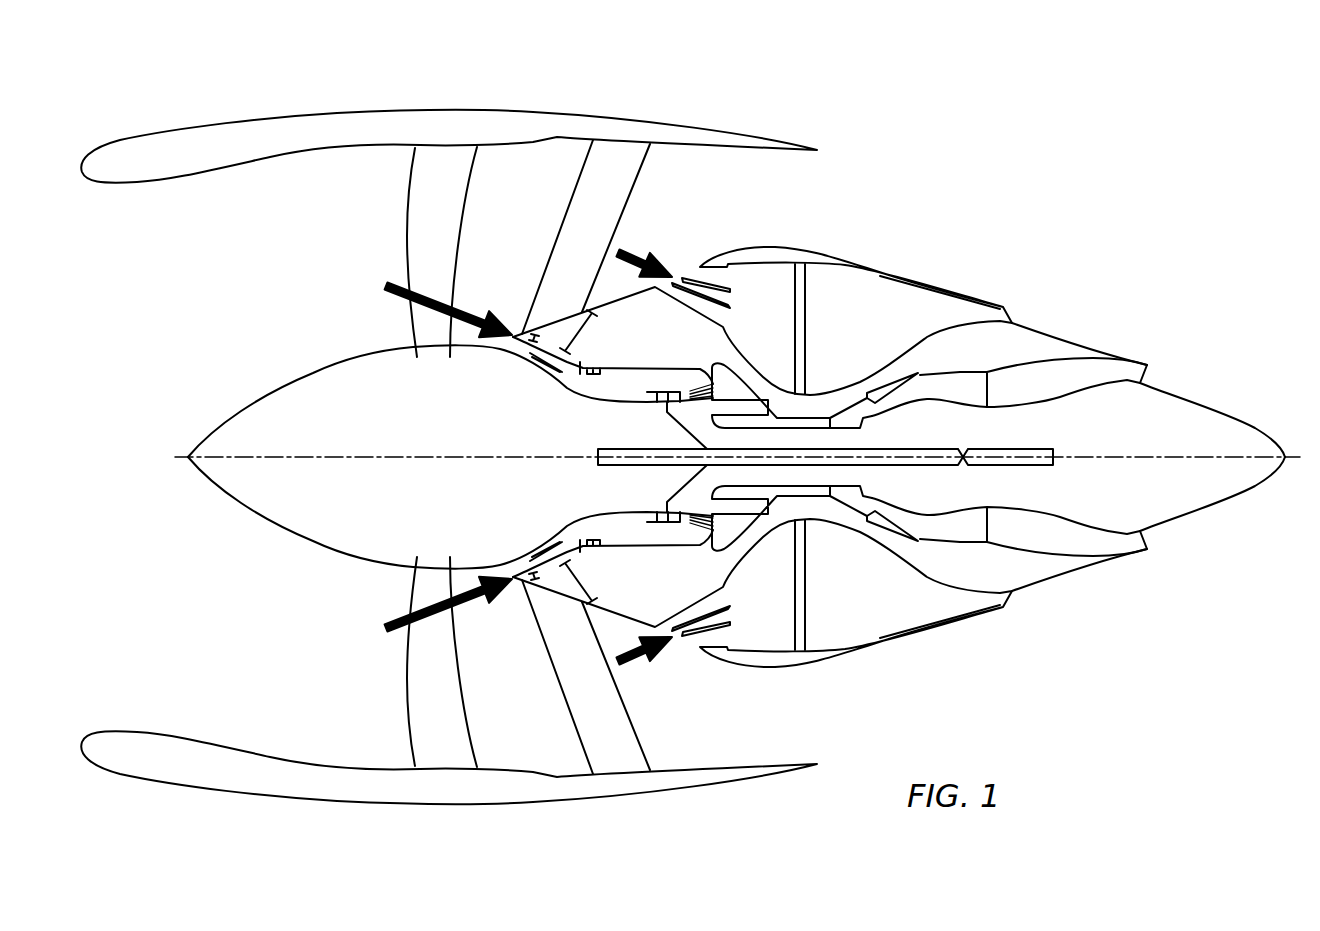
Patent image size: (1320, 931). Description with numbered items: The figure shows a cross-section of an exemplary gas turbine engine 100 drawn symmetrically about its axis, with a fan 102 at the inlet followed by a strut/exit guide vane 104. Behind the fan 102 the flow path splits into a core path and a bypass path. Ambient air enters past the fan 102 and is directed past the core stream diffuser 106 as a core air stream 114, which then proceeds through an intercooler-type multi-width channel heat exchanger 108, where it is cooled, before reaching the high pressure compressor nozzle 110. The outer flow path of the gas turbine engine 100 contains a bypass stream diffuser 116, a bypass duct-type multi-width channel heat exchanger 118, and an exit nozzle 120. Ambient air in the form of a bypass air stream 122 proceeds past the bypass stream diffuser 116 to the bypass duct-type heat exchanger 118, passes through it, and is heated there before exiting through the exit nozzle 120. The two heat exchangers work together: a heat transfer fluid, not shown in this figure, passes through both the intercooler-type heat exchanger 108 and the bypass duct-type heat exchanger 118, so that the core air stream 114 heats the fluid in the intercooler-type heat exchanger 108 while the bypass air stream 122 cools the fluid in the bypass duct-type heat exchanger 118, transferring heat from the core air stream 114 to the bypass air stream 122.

The gas turbine engine 100 is at (806, 101).
The fan 102 is at (402, 222).
The strut/exit guide vane 104 is at (567, 208).
The core stream diffuser 106 is at (690, 378).
The intercooler-type multi-width channel heat exchanger (MWCHX) 108 is at (728, 406).
The high pressure compressor nozzle 110 is at (740, 421).
The core air stream 114 is at (395, 298).
The bypass stream diffuser 116 is at (740, 294).
The bypass duct-type multi-width channel heat exchanger (MWCHX) 118 is at (808, 360).
The exit nozzle 120 is at (1000, 305).
The bypass air stream 122 is at (633, 253).